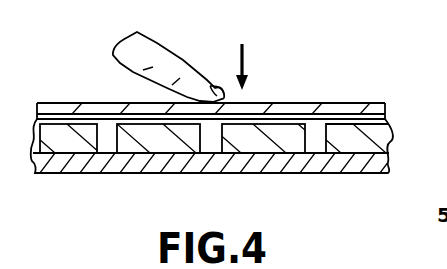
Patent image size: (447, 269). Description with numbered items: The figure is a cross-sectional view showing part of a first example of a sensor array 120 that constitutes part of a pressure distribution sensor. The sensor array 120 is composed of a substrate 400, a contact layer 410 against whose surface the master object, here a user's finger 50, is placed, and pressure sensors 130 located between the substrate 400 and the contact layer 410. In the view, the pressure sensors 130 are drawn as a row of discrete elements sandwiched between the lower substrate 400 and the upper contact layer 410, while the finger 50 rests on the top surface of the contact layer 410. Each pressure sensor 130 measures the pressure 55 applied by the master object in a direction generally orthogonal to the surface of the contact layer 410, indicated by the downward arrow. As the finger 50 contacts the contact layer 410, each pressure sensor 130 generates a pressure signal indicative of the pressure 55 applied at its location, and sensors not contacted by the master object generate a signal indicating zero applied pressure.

The user's finger 50 is at (178, 54).
The pressure 55 is at (246, 52).
The sensor array 120 is at (327, 100).
The pressure sensors 130 is at (88, 148).
The substrate 400 is at (204, 139).
The contact layer 410 is at (72, 110).